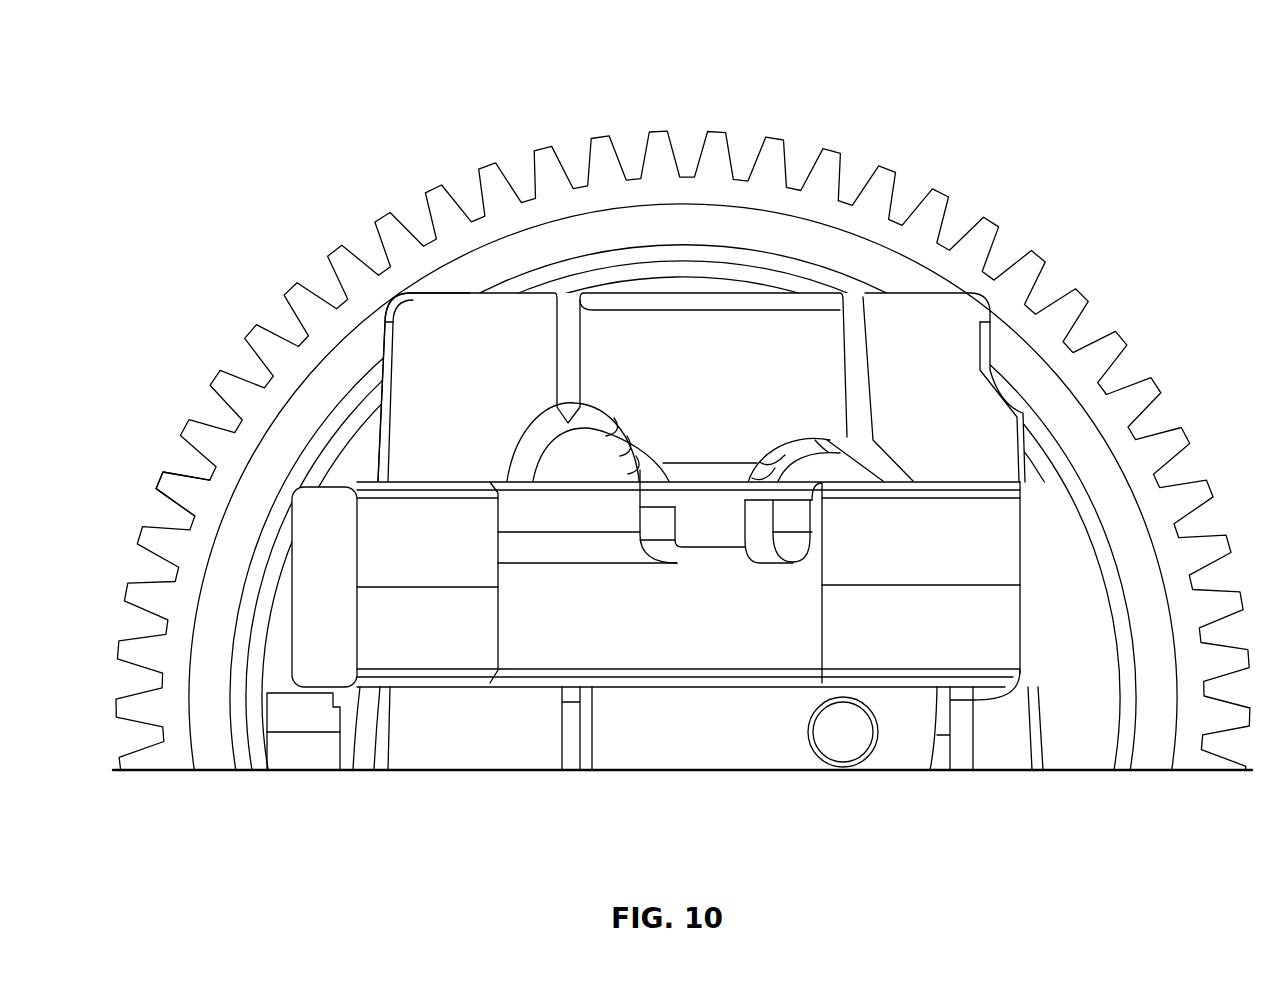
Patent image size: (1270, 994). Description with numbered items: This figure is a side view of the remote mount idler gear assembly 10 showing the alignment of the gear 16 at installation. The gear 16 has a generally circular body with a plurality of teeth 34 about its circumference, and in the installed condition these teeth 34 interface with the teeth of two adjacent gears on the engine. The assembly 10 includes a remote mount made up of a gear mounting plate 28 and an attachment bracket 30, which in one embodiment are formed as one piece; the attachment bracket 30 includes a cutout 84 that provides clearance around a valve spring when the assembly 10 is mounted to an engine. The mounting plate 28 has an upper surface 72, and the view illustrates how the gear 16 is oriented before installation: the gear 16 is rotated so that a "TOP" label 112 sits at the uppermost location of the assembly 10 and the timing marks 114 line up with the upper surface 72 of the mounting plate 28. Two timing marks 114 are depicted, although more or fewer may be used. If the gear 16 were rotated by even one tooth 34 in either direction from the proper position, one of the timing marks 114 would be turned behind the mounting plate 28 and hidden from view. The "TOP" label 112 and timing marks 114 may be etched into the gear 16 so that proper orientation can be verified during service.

The remote mount idler gear assembly 10 is at (1019, 57).
The gear 16 is at (996, 212).
The gear mounting plate 28 is at (360, 452).
The attachment bracket 30 is at (410, 702).
The teeth 34 is at (162, 473).
The upper surface 72 is at (540, 293).
The cutout 84 is at (610, 643).
The "TOP" label 112 is at (700, 203).
The timing marks 114 is at (427, 290).